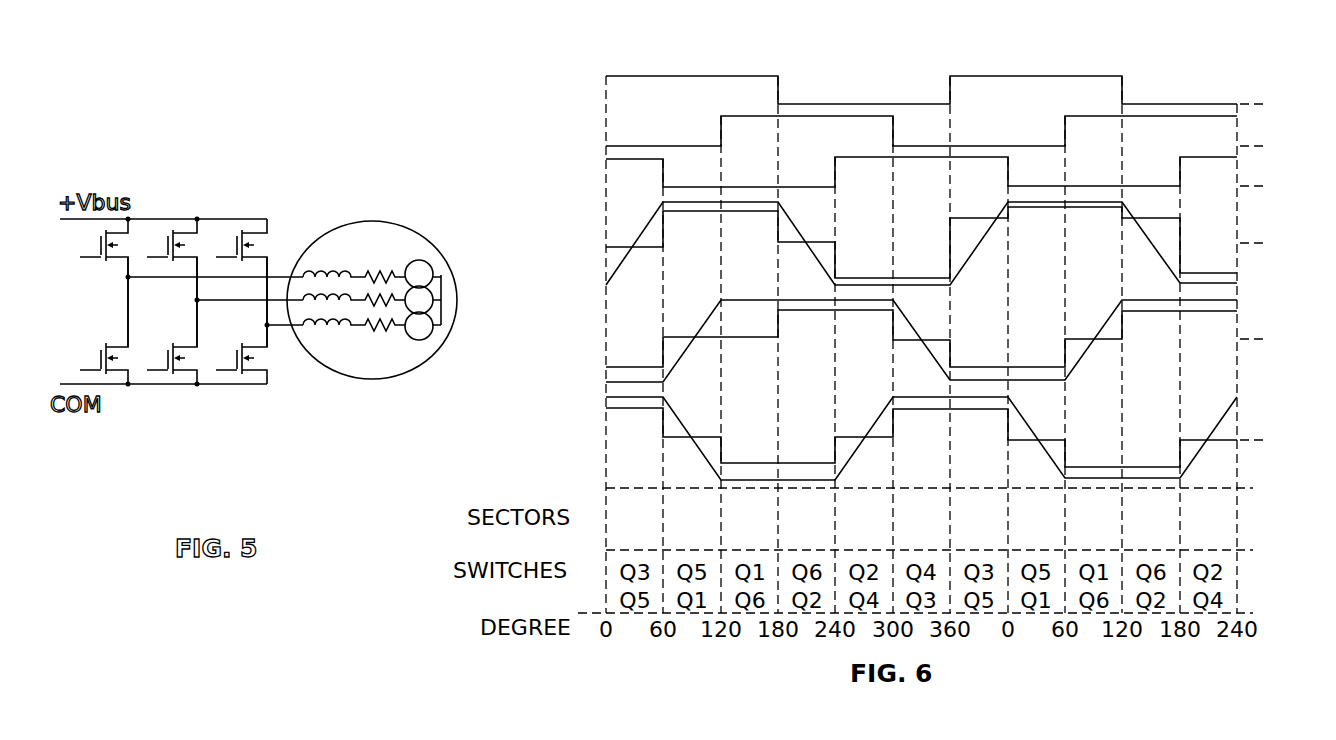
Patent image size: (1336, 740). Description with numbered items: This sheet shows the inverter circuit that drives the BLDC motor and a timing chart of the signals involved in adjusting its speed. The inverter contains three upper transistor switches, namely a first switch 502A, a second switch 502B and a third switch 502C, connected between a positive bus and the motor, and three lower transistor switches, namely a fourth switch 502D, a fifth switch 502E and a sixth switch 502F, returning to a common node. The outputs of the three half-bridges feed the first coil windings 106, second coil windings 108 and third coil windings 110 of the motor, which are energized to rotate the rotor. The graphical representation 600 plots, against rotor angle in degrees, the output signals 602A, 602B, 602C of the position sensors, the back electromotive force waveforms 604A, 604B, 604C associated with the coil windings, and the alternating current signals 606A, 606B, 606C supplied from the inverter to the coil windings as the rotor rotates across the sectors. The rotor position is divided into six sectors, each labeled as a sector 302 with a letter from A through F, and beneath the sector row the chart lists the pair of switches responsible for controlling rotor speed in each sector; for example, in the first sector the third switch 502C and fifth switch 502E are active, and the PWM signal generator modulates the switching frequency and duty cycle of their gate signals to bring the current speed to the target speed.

In FIG. 5, the first switch 502A is at (117, 233).
In FIG. 5, the second switch 502B is at (185, 233).
In FIG. 5, the third switch 502C is at (255, 233).
In FIG. 5, the fourth switch 502D is at (103, 372).
In FIG. 5, the fifth switch 502E is at (168, 372).
In FIG. 5, the sixth switch 502F is at (224, 372).
In FIG. 5, the first coil windings 106 is at (441, 325).
In FIG. 5, the second coil windings 108 is at (441, 277).
In FIG. 5, the third coil windings 110 is at (441, 300).
In FIG. 6, the graphical representation 600 is at (833, 72).
In FIG. 6, the output signal 602A is at (606, 80).
In FIG. 6, the output signal 602B is at (606, 145).
In FIG. 6, the output signal 602C is at (606, 159).
In FIG. 6, the back electromotive force waveform 604A is at (663, 202).
In FIG. 6, the back electromotive force waveform 604B is at (606, 382).
In FIG. 6, the back electromotive force waveform 604C is at (606, 397).
In FIG. 6, the alternating current signal 606A is at (606, 247).
In FIG. 6, the alternating current signal 606B is at (606, 348).
In FIG. 6, the alternating current signal 606C is at (638, 408).
In FIG. 6, the sector 302 is at (921, 522).